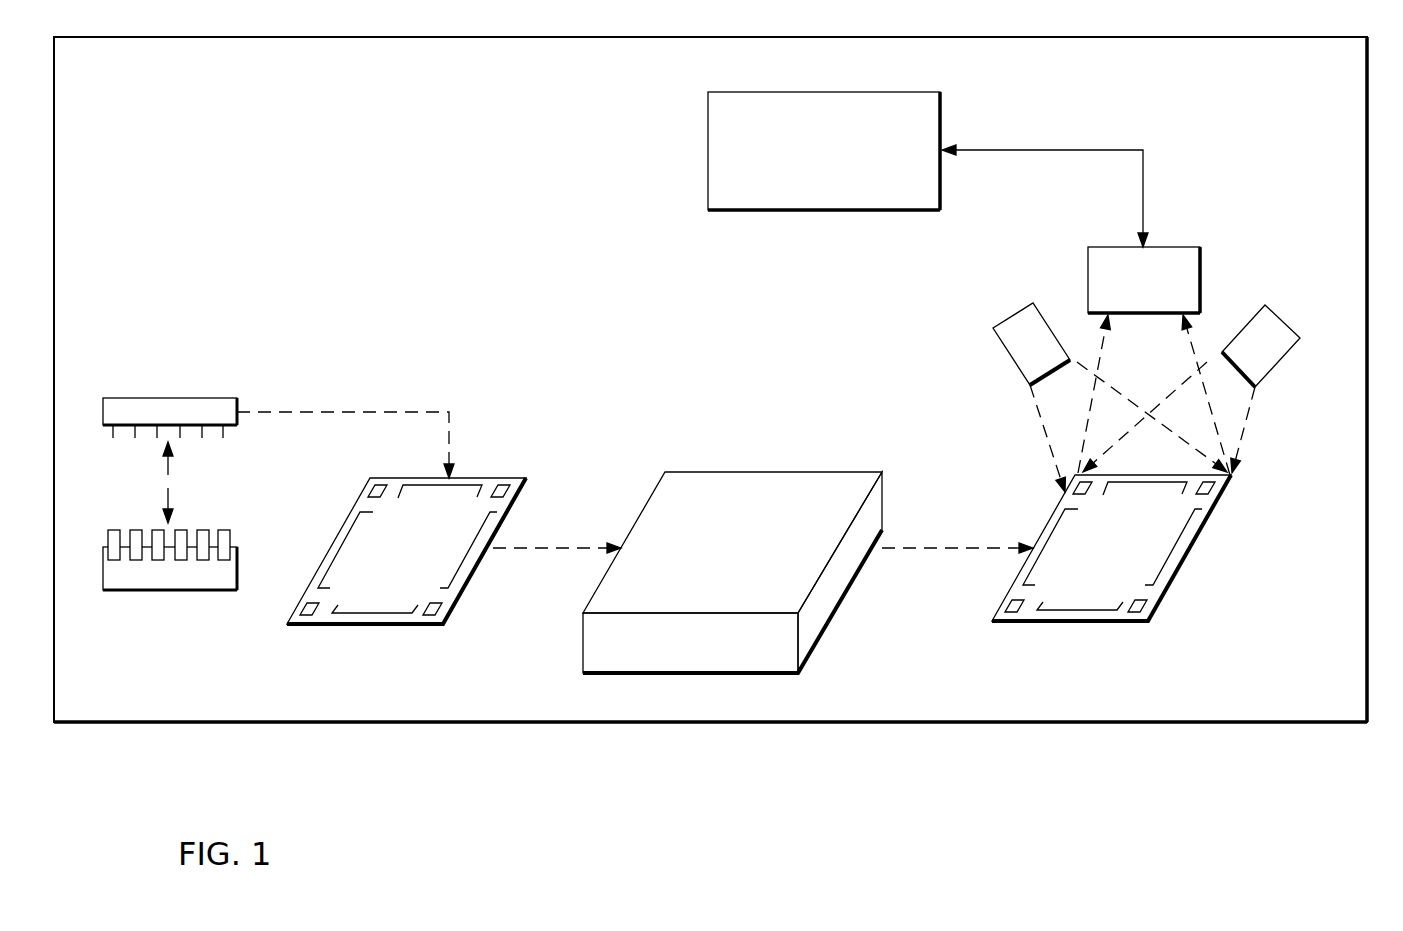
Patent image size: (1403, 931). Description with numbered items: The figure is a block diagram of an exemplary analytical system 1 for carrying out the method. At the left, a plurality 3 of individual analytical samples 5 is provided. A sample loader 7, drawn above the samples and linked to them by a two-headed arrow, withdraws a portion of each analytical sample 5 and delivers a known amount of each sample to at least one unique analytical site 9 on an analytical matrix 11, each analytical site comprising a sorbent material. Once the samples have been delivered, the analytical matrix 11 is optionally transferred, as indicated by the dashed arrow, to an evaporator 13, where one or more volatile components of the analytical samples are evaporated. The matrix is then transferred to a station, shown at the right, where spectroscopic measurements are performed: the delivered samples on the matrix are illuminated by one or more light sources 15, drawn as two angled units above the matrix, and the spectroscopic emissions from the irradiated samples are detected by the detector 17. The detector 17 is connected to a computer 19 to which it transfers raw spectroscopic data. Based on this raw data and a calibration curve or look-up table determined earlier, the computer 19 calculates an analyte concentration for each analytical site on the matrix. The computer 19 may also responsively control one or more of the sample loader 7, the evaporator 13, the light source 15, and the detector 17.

The analytical system 1 is at (278, 725).
The plurality of individual analytical samples 3 is at (160, 588).
The analytical sample 5 is at (133, 530).
The sample loader 7 is at (157, 396).
The analytical site 9 is at (407, 477).
The analytical matrix 11 is at (322, 625).
The evaporator 13 is at (743, 470).
The light source 15 is at (1012, 357).
The detector 17 is at (1105, 247).
The computer 19 is at (770, 92).